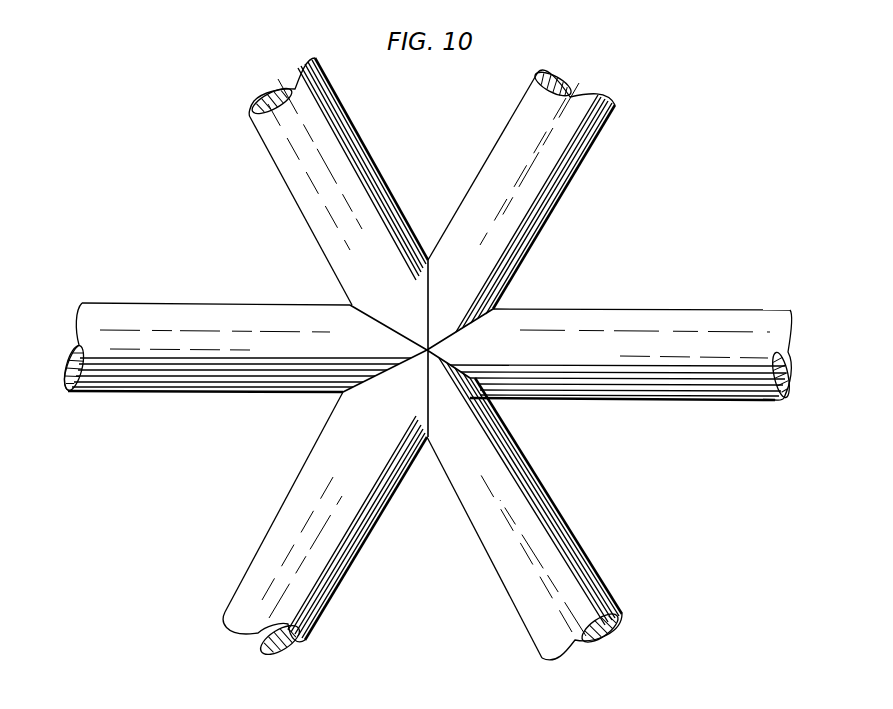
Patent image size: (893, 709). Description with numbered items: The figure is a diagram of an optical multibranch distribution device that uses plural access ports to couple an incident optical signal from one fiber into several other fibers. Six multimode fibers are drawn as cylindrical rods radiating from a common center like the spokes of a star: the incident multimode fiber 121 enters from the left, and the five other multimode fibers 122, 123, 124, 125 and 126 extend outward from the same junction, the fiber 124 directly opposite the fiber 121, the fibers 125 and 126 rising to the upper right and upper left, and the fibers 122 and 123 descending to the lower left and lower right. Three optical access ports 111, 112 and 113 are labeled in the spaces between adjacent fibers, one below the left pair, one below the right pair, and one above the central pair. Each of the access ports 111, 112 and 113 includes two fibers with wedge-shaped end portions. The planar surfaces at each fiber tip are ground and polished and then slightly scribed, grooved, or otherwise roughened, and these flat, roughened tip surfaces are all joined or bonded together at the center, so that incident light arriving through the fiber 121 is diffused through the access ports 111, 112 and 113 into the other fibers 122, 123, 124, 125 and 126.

The optical access port 111 is at (254, 455).
The optical access port 112 is at (591, 462).
The optical access port 113 is at (441, 226).
The multimode fiber 121 is at (171, 313).
The multimode fiber 122 is at (252, 598).
The multimode fiber 123 is at (590, 597).
The multimode fiber 124 is at (690, 319).
The multimode fiber 125 is at (585, 150).
The multimode fiber 126 is at (283, 141).